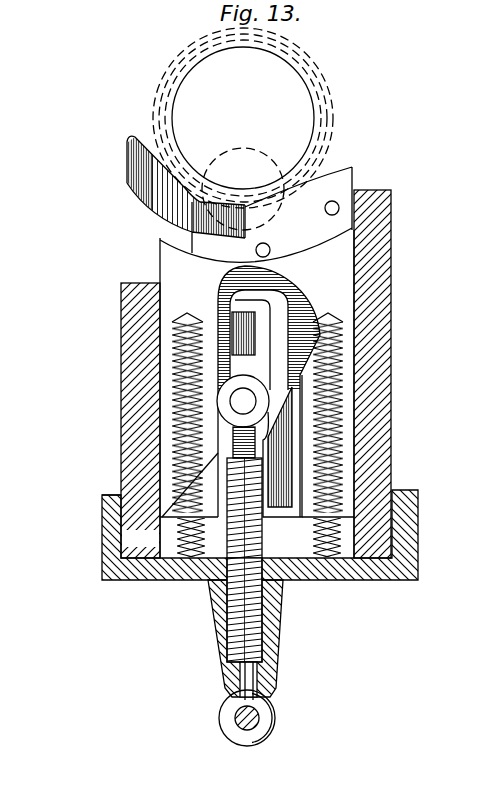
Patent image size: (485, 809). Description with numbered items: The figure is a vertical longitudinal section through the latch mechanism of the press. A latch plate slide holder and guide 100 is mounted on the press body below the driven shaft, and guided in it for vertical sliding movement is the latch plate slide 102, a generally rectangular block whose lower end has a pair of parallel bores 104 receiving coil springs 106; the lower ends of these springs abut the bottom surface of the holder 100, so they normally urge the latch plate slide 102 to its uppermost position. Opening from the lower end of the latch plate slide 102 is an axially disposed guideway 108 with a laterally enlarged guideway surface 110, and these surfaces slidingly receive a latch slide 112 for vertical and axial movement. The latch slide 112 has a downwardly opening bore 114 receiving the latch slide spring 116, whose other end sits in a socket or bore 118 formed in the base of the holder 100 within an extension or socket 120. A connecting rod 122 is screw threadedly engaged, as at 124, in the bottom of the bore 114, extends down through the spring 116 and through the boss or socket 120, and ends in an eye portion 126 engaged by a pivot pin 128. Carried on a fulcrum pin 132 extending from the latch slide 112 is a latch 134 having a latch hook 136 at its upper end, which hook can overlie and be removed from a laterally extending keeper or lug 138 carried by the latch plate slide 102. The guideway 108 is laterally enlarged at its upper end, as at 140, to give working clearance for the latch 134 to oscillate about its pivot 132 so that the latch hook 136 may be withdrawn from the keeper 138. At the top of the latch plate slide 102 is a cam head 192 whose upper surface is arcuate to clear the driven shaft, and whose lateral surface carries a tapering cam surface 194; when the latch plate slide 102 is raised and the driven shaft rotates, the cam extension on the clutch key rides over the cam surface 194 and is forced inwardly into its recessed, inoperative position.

The latch plate slide holder and guide 100 is at (385, 448).
The latch plate slide 102 is at (340, 286).
The parallel bores 104 is at (145, 430).
The coil springs 106 is at (190, 556).
The guideway 108 is at (162, 516).
The laterally enlarged guideway surface 110 is at (180, 487).
The latch slide 112 is at (228, 373).
The downwardly opening bore 114 is at (252, 520).
The latch slide spring 116 is at (232, 640).
The socket or bore 118 is at (260, 640).
The extension or socket 120 is at (267, 668).
The connecting rod 122 is at (243, 677).
The screw threaded engagement 124 is at (228, 445).
The eye portion 126 is at (272, 716).
The pivot pin 128 is at (243, 730).
The fulcrum pin 132 is at (243, 401).
The latch 134 is at (272, 437).
The latch hook 136 is at (260, 287).
The keeper or lug 138 is at (238, 323).
The lateral enlargement 140 is at (305, 282).
The cam head 192 is at (317, 192).
The tapering cam surface 194 is at (143, 176).